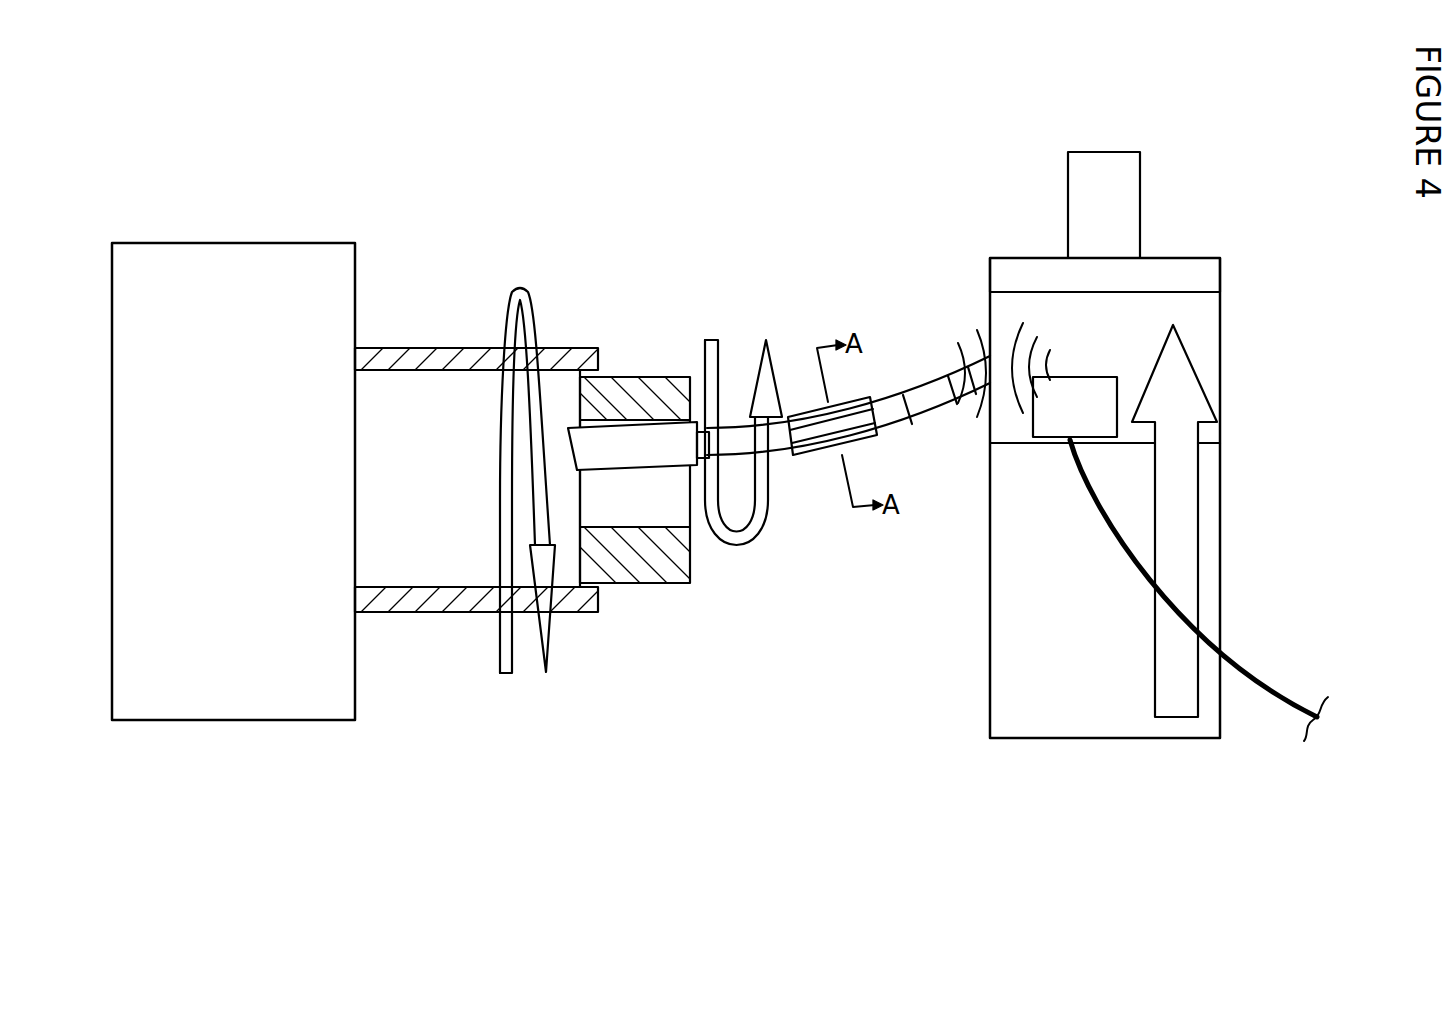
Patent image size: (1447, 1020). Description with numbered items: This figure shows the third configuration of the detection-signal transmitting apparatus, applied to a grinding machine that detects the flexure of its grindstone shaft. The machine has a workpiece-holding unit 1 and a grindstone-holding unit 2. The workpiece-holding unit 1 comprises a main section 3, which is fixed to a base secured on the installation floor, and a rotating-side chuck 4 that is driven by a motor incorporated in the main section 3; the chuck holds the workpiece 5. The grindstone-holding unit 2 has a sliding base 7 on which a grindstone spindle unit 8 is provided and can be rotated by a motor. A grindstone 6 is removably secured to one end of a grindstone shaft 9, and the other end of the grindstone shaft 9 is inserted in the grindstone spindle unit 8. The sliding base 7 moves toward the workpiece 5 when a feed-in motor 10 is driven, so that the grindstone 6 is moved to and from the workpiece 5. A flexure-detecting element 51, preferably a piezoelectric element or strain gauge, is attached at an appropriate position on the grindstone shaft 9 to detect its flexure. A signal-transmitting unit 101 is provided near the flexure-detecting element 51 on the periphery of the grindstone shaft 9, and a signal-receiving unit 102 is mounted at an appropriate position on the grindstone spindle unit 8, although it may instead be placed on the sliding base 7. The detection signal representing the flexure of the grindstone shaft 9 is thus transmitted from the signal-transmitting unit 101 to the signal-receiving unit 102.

The workpiece-holding unit 1 is at (403, 153).
The grindstone-holding unit 2 is at (1280, 102).
The main section 3 is at (320, 272).
The rotating-side chuck 4 is at (406, 352).
The workpiece 5 is at (652, 560).
The grindstone 6 is at (582, 440).
The sliding base 7 is at (1190, 270).
The grindstone spindle unit 8 is at (1203, 310).
The grindstone shaft 9 is at (890, 420).
The feed-in motor 10 is at (1128, 188).
The flexure-detecting element 51 is at (807, 457).
The signal-transmitting unit 101 is at (928, 388).
The signal-receiving unit 102 is at (1043, 430).